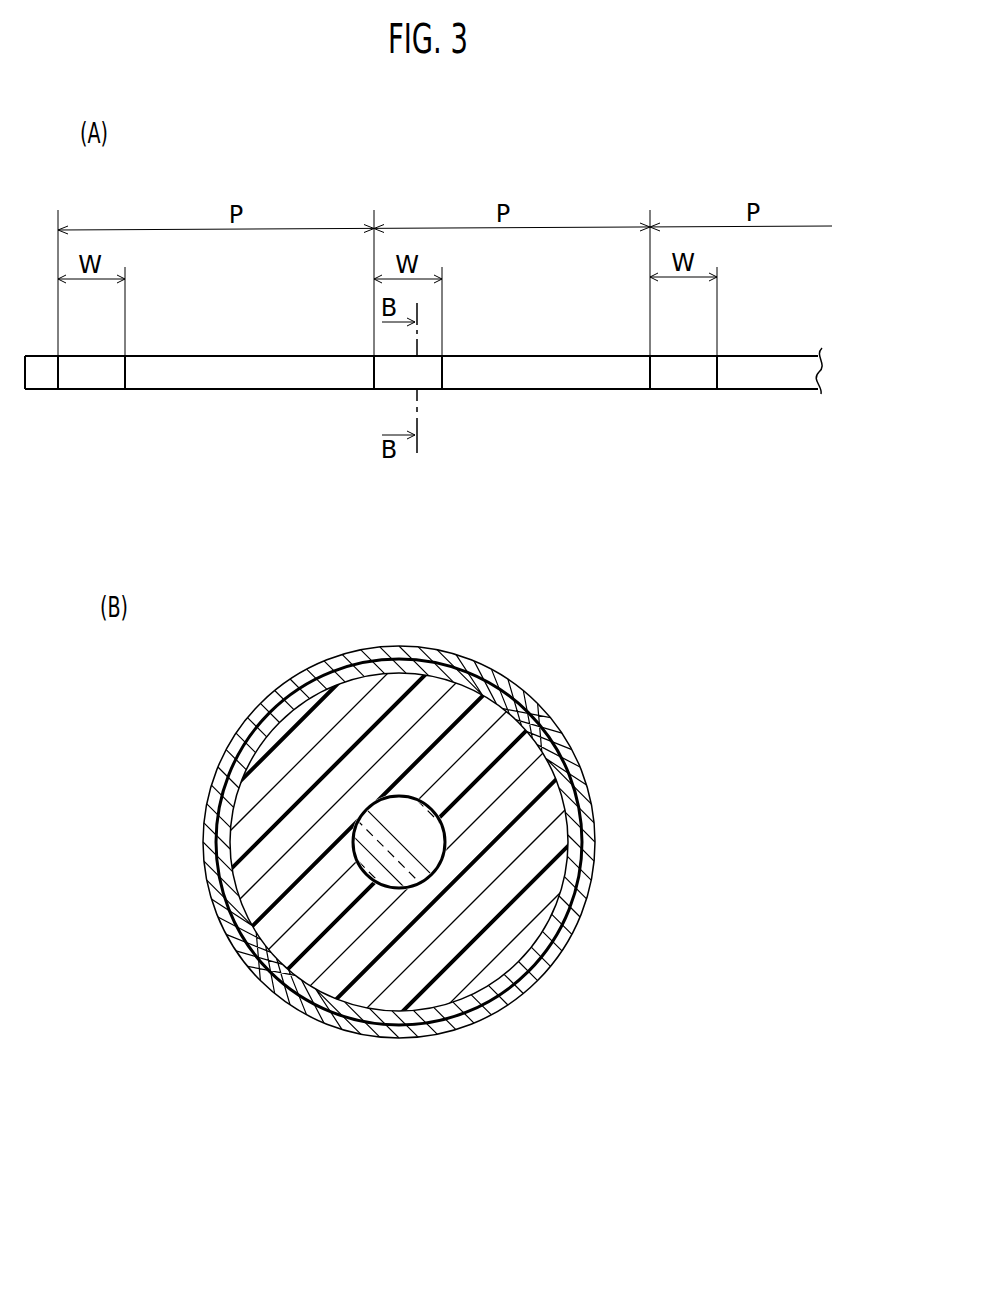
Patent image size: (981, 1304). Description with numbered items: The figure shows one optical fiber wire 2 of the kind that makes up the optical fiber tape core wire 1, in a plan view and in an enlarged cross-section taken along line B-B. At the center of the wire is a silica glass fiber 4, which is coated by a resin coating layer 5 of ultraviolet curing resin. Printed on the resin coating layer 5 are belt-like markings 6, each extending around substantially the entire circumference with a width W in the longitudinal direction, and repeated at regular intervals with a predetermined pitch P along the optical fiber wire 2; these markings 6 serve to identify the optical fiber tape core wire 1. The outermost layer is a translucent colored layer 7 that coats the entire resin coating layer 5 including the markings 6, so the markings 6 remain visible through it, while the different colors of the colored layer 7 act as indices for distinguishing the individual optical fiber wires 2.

The optical fiber tape core wire 1 is at (293, 413).
The optical fiber wire 2 is at (291, 1046).
The silica glass fiber 4 is at (404, 847).
The resin coating layer 5 is at (545, 842).
The markings 6 is at (90, 377).
The translucent colored layer 7 is at (545, 375).